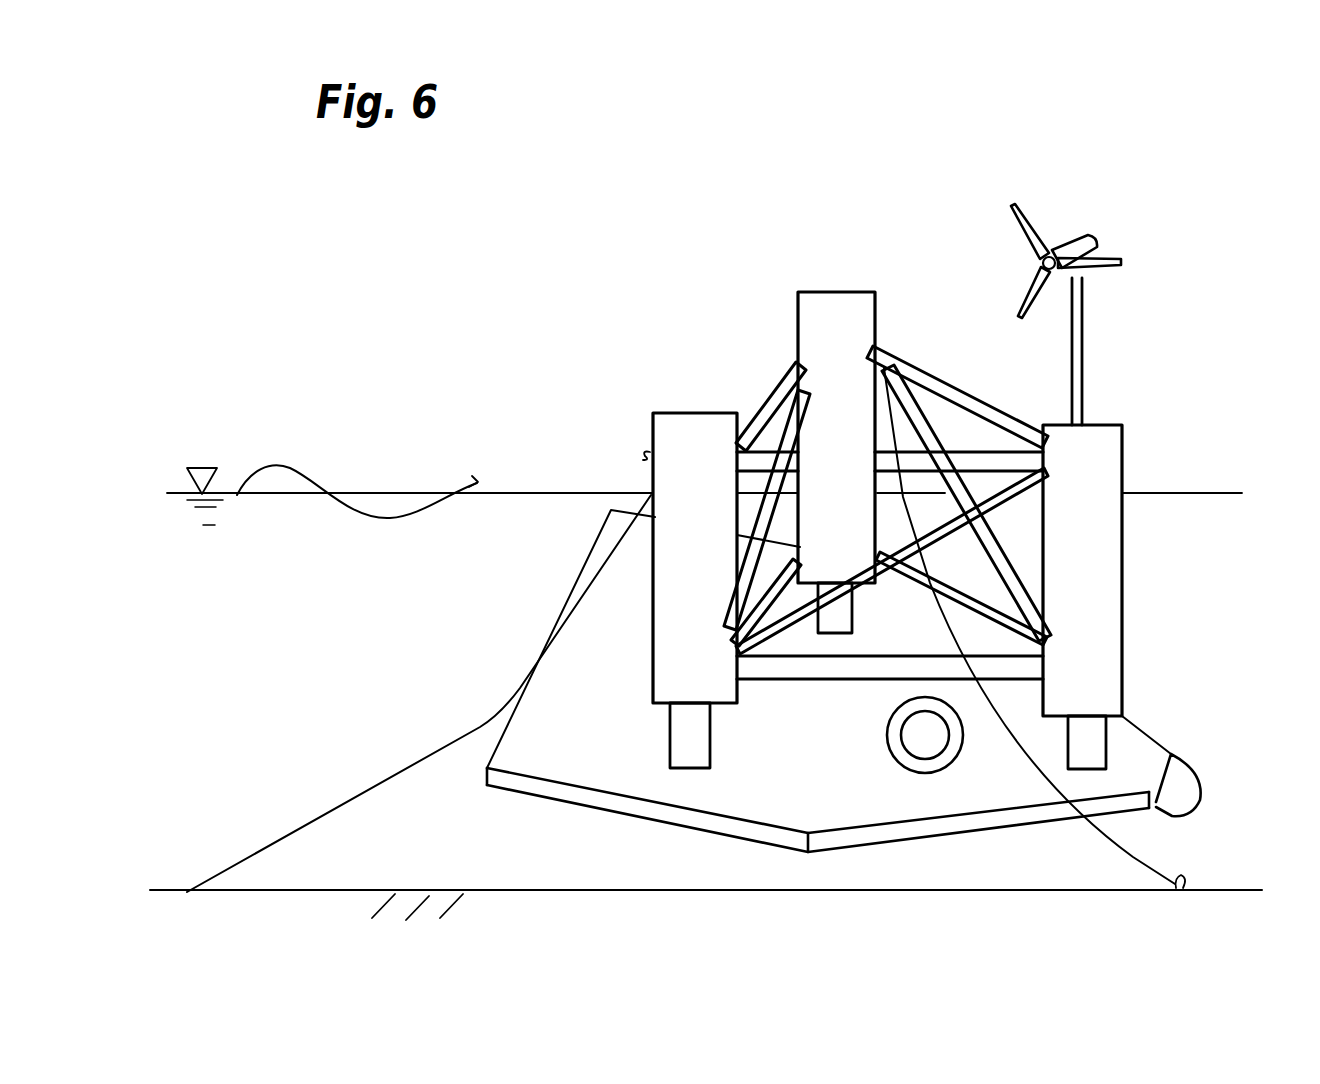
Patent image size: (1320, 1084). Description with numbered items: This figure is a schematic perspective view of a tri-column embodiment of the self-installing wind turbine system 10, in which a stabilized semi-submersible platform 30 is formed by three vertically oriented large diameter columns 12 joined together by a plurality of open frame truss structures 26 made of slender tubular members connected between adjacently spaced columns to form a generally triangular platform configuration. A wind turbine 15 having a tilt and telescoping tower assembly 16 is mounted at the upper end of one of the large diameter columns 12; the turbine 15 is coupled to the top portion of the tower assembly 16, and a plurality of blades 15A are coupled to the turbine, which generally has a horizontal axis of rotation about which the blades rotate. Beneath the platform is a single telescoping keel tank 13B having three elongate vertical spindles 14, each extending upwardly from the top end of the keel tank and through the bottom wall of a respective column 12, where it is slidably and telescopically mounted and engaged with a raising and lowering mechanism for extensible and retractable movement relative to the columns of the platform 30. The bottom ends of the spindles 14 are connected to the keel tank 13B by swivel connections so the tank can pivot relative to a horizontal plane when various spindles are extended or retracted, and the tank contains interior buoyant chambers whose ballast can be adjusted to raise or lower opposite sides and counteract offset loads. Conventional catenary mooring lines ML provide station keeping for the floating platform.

The self-installing wind turbine system 10 is at (936, 200).
The large diameter column 12 is at (840, 305).
The single telescoping keel tank 13B is at (606, 754).
The vertical spindle 14 is at (852, 608).
The wind turbine 15 is at (1074, 240).
The blade 15A is at (1027, 247).
The tilt and telescoping tower assembly 16 is at (1085, 343).
The open frame truss structure 26 is at (763, 396).
The stabilized semi-submersible platform 30 is at (722, 318).
The catenary mooring line ML is at (415, 758).